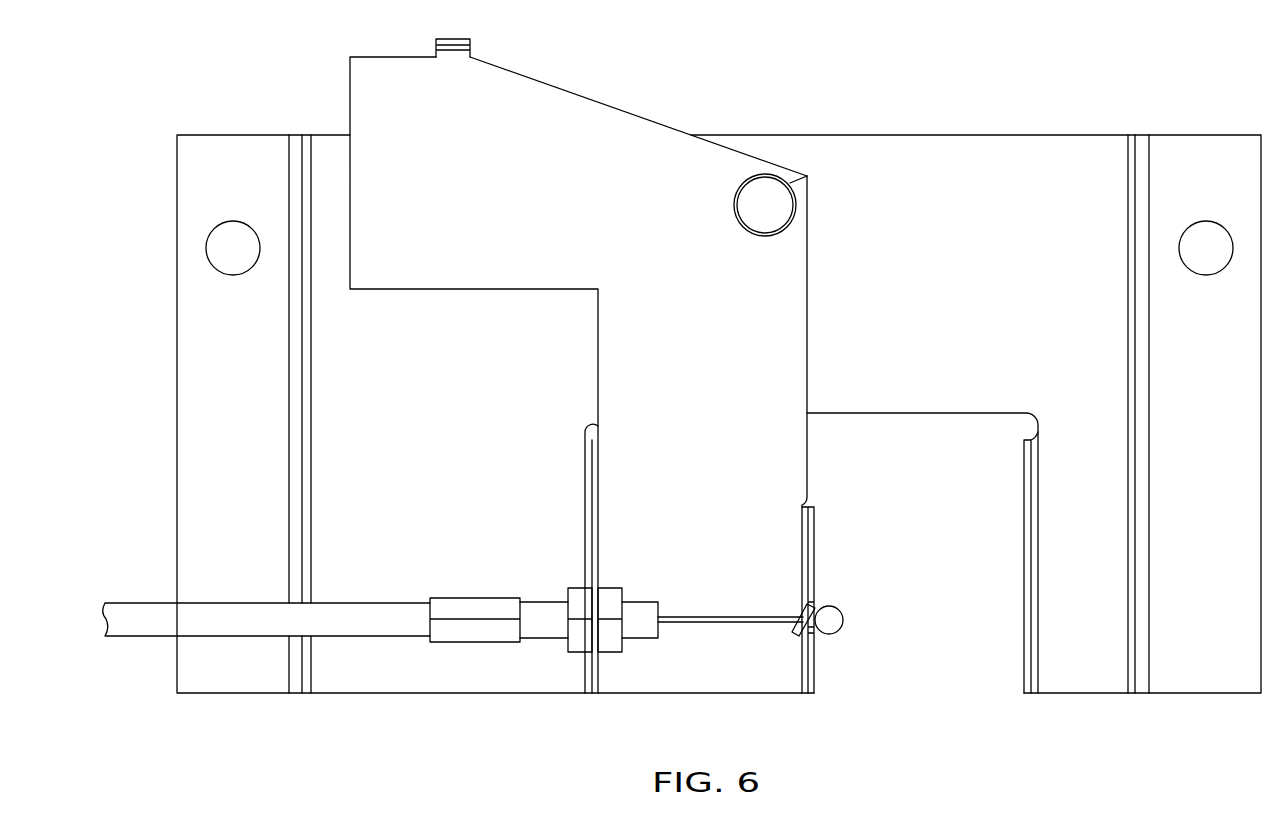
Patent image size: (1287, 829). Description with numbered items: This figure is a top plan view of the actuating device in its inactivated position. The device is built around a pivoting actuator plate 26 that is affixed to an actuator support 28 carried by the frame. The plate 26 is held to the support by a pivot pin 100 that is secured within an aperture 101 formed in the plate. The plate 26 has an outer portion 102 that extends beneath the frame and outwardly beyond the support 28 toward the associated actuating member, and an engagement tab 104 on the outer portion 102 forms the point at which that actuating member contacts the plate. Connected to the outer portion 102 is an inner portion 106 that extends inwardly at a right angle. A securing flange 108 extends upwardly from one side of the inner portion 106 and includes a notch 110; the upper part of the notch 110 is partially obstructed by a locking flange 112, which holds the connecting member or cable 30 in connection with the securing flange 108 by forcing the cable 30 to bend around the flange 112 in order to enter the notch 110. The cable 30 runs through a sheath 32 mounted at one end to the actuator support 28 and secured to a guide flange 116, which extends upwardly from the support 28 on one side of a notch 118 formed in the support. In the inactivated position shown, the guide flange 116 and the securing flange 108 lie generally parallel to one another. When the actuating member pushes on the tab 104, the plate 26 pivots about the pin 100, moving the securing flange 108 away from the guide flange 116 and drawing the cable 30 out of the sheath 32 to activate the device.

The pivoting actuator plate 26 is at (620, 90).
The actuator support 28 is at (437, 690).
The connecting member 30 is at (730, 615).
The sheath 32 is at (378, 617).
The pivot pin 100 is at (764, 192).
The aperture 101 is at (807, 176).
The outer portion 102 is at (365, 78).
The engagement tab 104 is at (448, 38).
The inner portion 106 is at (785, 305).
The securing flange 108 is at (815, 577).
The notch 110 is at (816, 635).
The locking flange 112 is at (795, 630).
The guide flange 116 is at (584, 508).
The notch 118 is at (917, 413).